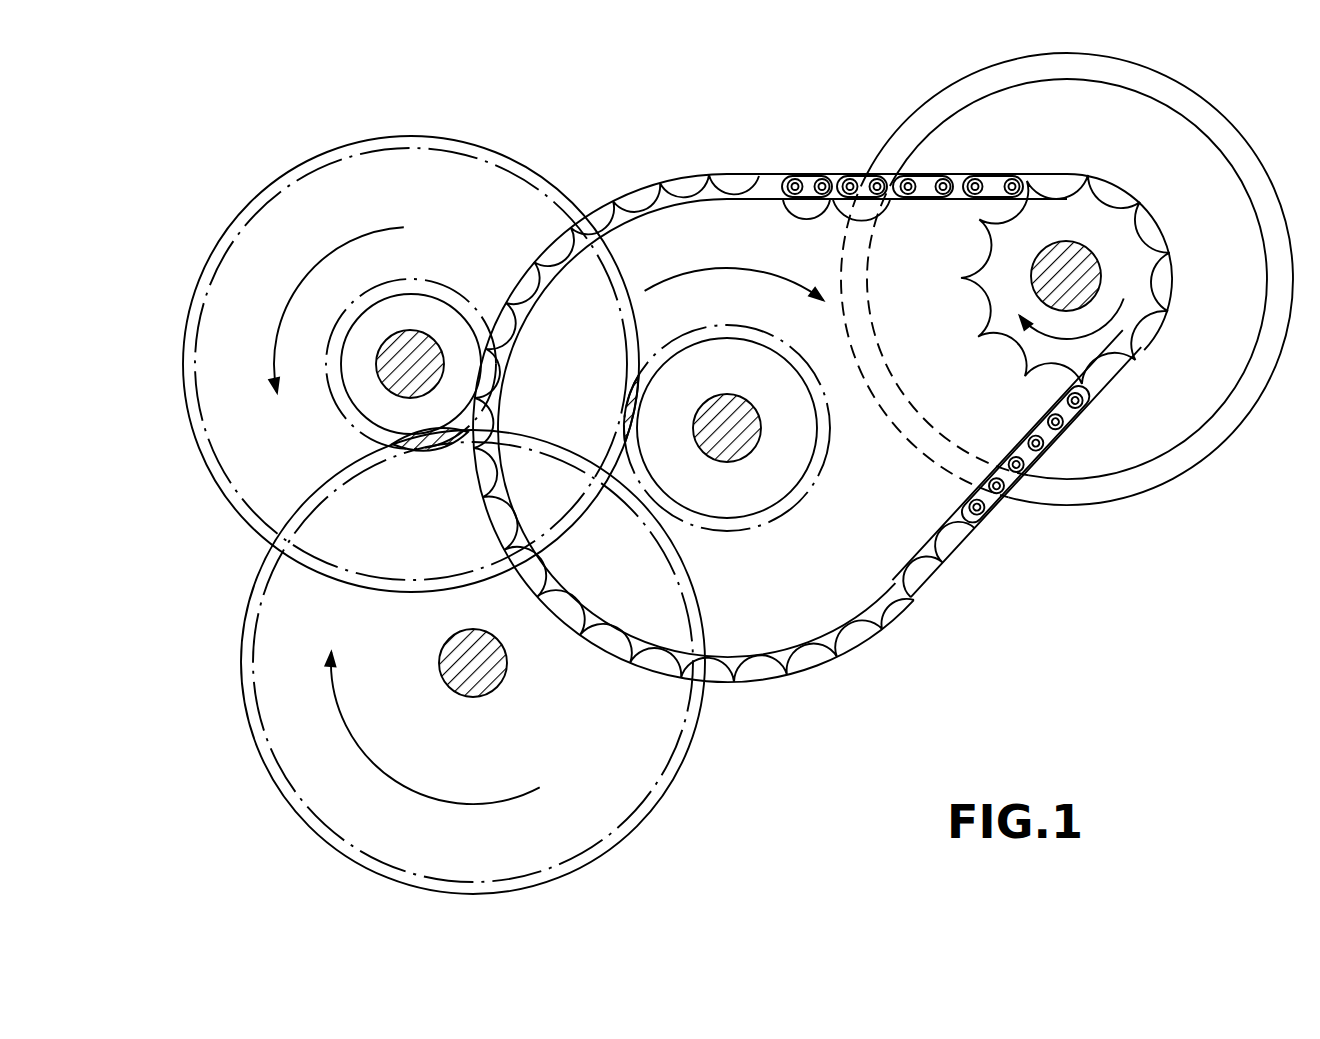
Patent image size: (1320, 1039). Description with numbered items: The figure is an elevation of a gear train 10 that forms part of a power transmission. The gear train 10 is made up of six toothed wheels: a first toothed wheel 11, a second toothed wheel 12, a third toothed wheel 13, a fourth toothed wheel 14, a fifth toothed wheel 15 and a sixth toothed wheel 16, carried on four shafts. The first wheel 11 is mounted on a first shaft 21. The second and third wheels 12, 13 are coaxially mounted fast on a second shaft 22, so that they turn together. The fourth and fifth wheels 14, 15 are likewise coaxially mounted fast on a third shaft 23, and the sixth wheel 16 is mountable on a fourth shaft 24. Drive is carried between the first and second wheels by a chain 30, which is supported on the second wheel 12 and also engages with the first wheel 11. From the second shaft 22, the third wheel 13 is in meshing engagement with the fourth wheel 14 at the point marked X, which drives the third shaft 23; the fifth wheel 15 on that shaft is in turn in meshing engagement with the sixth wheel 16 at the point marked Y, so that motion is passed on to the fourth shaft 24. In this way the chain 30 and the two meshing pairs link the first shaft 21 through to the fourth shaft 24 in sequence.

The gear train 10 is at (185, 695).
The first toothed wheel 11 is at (1133, 277).
The second toothed wheel 12 is at (822, 408).
The third toothed wheel 13 is at (828, 460).
The fourth toothed wheel 14 is at (259, 480).
The fifth toothed wheel 15 is at (455, 290).
The sixth toothed wheel 16 is at (290, 619).
The first shaft 21 is at (1090, 253).
The second shaft 22 is at (739, 418).
The third shaft 23 is at (404, 353).
The fourth shaft 24 is at (466, 672).
The chain 30 is at (837, 174).
The meshing engagement x X is at (640, 412).
The meshing engagement y Y is at (427, 454).